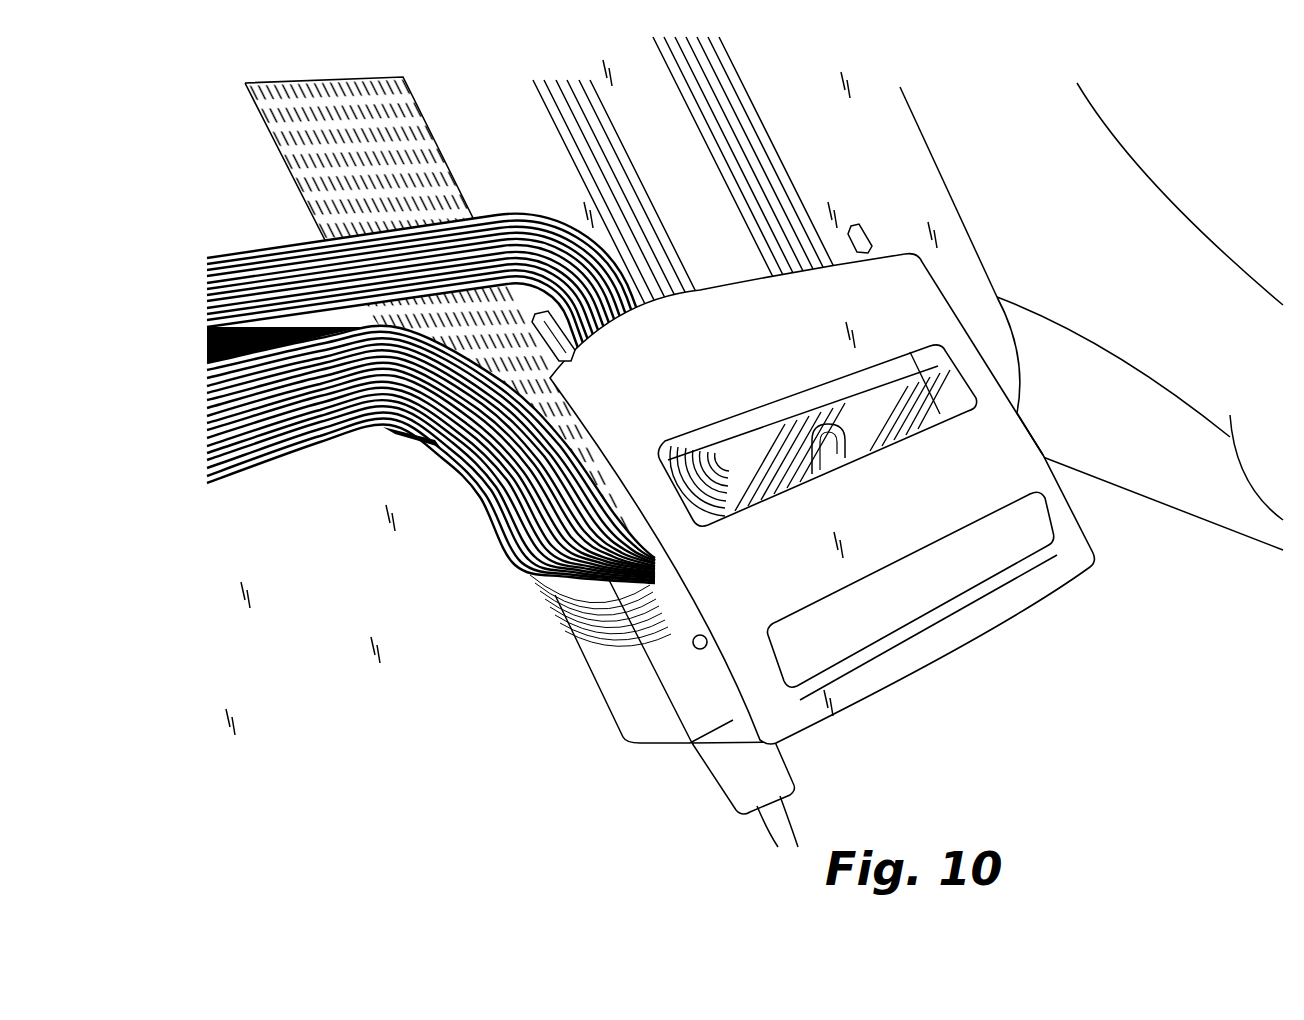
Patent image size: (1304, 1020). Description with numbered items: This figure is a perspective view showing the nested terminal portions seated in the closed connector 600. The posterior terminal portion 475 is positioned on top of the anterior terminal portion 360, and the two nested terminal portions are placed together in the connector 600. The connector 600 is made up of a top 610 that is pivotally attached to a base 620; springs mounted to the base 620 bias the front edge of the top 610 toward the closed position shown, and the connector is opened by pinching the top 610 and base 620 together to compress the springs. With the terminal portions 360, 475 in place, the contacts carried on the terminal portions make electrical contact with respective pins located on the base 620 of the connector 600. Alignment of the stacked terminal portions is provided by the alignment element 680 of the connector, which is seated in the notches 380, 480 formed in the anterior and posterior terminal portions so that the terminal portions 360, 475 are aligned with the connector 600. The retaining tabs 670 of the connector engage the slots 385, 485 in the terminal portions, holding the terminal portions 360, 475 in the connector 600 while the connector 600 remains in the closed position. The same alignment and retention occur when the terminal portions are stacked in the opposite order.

The anterior terminal portion 360 is at (286, 191).
The posterior terminal portion 475 is at (512, 585).
The slot 385 is at (720, 303).
The slot 485 is at (538, 318).
The notch 380 is at (786, 497).
The notch 480 is at (815, 452).
The retaining tabs 670 is at (720, 272).
The alignment element 680 is at (858, 410).
The connector 600 is at (785, 395).
The top 610 is at (1027, 620).
The base 620 is at (667, 747).